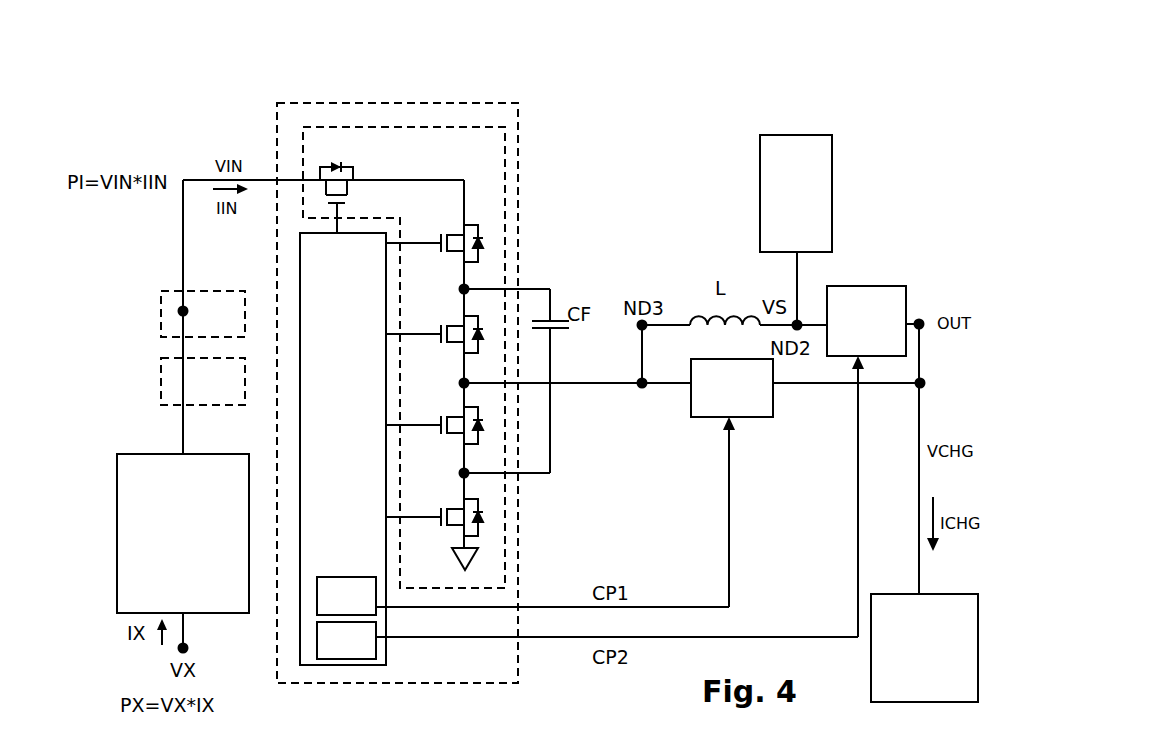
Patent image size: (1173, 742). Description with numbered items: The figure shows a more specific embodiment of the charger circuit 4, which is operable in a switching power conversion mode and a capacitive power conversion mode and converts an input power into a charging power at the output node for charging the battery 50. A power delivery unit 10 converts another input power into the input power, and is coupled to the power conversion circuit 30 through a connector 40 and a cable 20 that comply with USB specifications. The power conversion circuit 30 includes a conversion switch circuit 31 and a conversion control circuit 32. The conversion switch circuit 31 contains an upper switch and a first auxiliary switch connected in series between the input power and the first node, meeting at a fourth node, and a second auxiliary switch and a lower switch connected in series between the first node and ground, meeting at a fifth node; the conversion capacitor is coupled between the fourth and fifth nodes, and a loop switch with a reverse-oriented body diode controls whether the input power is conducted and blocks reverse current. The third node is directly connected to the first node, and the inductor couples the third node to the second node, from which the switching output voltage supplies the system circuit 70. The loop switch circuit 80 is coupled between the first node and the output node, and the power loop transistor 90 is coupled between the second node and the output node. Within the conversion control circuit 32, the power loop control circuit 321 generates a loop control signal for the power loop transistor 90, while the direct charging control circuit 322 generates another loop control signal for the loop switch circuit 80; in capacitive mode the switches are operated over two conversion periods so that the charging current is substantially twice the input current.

The charger circuit 4 is at (244, 121).
The power delivery unit 10 is at (171, 585).
The cable 20 is at (206, 392).
The power conversion circuit 30 is at (475, 672).
The conversion switch circuit 31 is at (468, 157).
The conversion control circuit 32 is at (335, 549).
The connector 40 is at (206, 325).
The battery 50 is at (907, 689).
The system circuit 70 is at (784, 231).
The loop switch circuit 80 is at (718, 399).
The power loop transistor 90 is at (853, 331).
The power loop control circuit 321 is at (329, 651).
The direct charging control circuit 322 is at (329, 607).